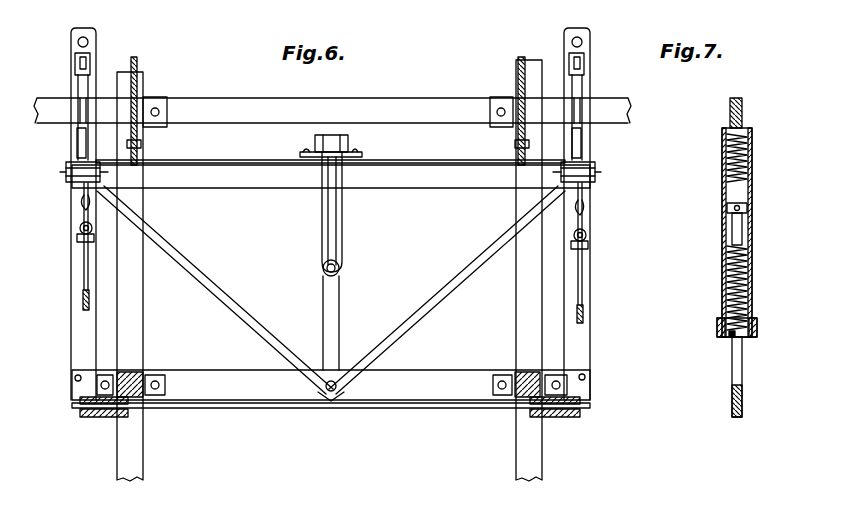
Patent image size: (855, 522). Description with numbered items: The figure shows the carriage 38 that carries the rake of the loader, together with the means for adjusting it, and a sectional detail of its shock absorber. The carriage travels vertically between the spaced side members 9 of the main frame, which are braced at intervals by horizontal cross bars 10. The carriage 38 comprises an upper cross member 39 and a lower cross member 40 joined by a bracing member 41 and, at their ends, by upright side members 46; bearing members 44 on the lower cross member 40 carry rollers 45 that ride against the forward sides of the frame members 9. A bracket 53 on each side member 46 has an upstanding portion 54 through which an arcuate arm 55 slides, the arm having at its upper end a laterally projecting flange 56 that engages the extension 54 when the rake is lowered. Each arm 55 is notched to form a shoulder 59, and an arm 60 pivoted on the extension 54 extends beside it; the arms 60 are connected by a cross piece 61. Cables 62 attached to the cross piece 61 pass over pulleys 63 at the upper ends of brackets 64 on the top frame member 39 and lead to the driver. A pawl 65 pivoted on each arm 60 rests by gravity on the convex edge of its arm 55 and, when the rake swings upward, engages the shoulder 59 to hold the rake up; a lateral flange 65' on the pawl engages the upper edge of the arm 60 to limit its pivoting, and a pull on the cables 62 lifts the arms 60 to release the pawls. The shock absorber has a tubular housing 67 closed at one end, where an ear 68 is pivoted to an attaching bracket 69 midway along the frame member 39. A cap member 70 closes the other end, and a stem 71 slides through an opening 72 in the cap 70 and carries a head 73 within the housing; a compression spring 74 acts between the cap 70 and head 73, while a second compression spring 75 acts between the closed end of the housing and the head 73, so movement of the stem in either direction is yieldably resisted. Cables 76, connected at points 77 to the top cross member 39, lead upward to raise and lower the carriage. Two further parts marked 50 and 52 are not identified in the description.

In FIG. 6, the side members 9 is at (135, 450).
In FIG. 6, the horizontal cross bars 10 is at (257, 98).
In FIG. 6, the carriage 38 is at (74, 331).
In FIG. 6, the upper cross member 39 is at (422, 185).
In FIG. 6, the lower cross member 40 is at (432, 376).
In FIG. 6, the bracing member 41 is at (332, 293).
In FIG. 6, the bearing members 44 is at (146, 392).
In FIG. 6, the rollers 45 is at (125, 380).
In FIG. 6, the upright side members 46 is at (84, 325).
In FIG. 6, the arm 50 is at (396, 0).
In FIG. 6, the guide rail 52 is at (100, 418).
In FIG. 6, the bracket 53 is at (76, 205).
In FIG. 6, the upstanding portion 54 is at (72, 145).
In FIG. 6, the arcuate arm 55 is at (72, 183).
In FIG. 6, the laterally projecting flange 56 is at (76, 105).
In FIG. 6, the shoulder 59 is at (600, 165).
In FIG. 6, the arm 60 is at (100, 198).
In FIG. 6, the cross piece 61 is at (95, 238).
In FIG. 6, the cables 62 is at (78, 80).
In FIG. 6, the pulleys 63 is at (90, 55).
In FIG. 6, the brackets 64 is at (86, 28).
In FIG. 6, the pawl 65 is at (363, 286).
In FIG. 6, the lateral flange 65' is at (408, 173).
In FIG. 6, the tubular housing 67 is at (336, 212).
In FIG. 7, the tubular housing 67 is at (752, 185).
In FIG. 6, the ear 68 is at (330, 135).
In FIG. 7, the ear 68 is at (742, 100).
In FIG. 6, the attaching bracket 69 is at (342, 135).
In FIG. 7, the cap member 70 is at (718, 326).
In FIG. 6, the stem 71 is at (342, 268).
In FIG. 7, the stem 71 is at (743, 362).
In FIG. 7, the opening 72 is at (728, 337).
In FIG. 7, the head 73 is at (745, 208).
In FIG. 7, the compression spring 74 is at (752, 262).
In FIG. 7, the compression spring 75 is at (752, 140).
In FIG. 6, the cables 76 is at (136, 60).
In FIG. 6, the connection points 77 is at (140, 160).